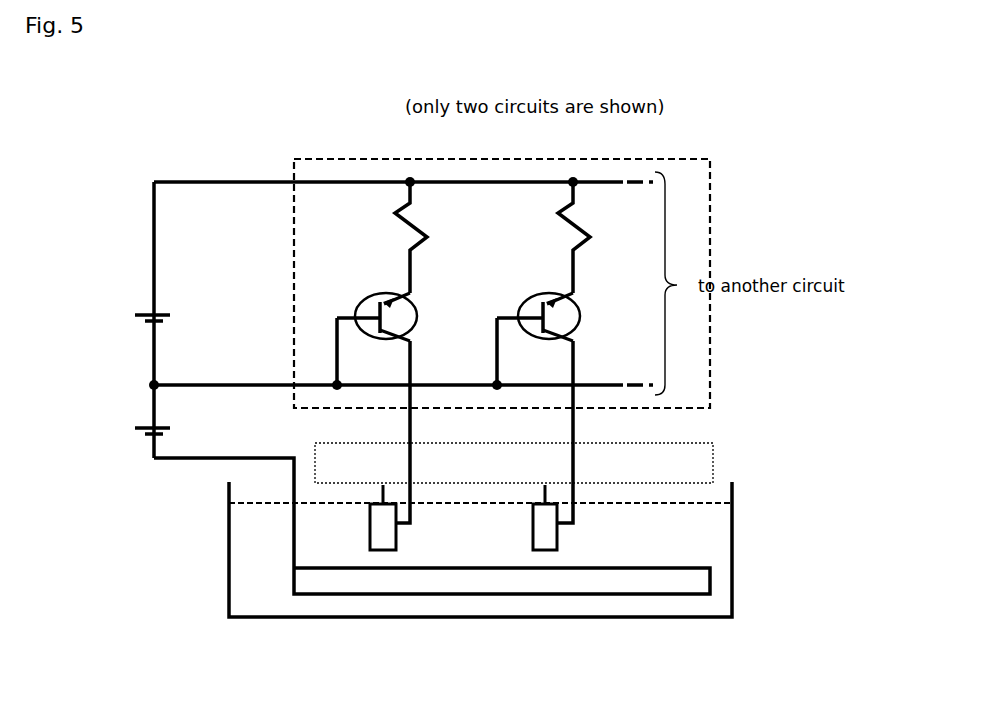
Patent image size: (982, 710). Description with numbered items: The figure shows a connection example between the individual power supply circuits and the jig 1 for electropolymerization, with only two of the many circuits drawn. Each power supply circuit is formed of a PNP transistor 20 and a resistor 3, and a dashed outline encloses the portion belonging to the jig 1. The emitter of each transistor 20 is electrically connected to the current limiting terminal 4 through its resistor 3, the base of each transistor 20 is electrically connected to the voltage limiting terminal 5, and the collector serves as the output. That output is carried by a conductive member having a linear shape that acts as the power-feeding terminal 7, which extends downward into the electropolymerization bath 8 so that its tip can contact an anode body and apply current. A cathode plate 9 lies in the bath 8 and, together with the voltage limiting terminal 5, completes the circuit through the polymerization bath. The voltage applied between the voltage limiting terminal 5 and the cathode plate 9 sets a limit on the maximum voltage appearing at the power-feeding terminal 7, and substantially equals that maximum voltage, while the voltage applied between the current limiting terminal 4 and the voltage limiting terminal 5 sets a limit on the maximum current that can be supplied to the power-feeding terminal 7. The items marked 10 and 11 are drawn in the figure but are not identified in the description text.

The jig for electropolymerization 1 is at (488, 165).
The resistor 3 is at (573, 228).
The current limiting terminal 4 is at (293, 181).
The voltage limiting terminal 5 is at (293, 385).
The power-feeding terminal 7 is at (400, 410).
The electropolymerization bath 8 is at (229, 553).
The cathode plate 9 is at (470, 582).
The electrode 10 is at (387, 551).
The connection region 11 is at (693, 458).
The PNP transistor 20 is at (581, 322).